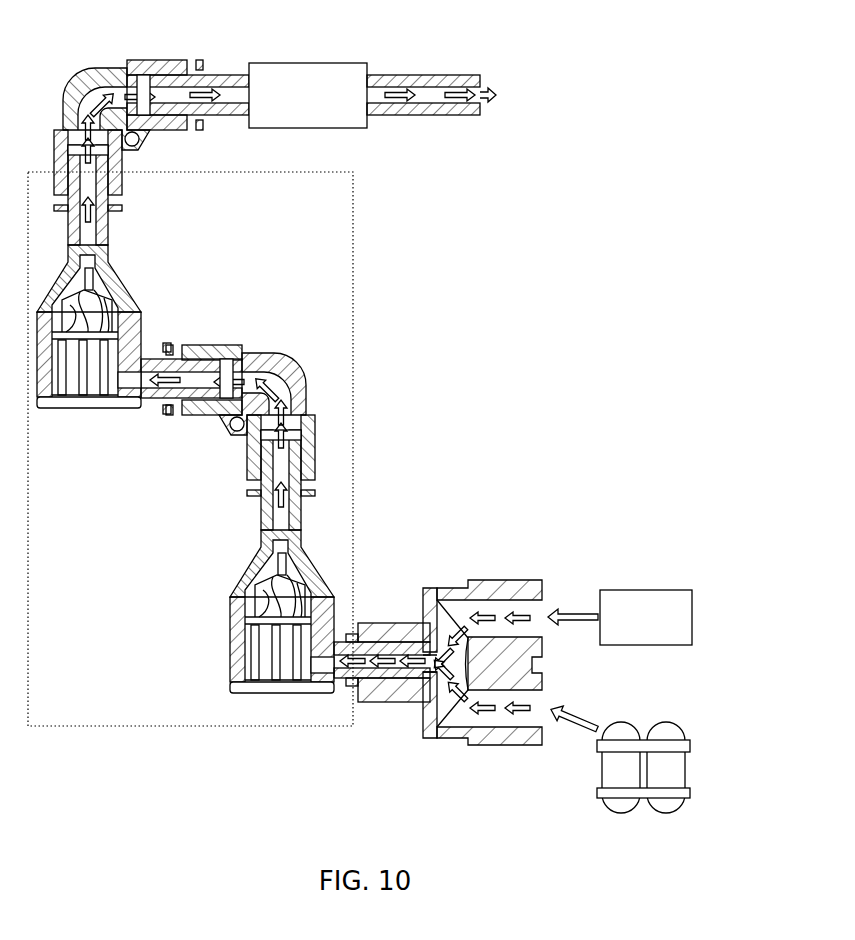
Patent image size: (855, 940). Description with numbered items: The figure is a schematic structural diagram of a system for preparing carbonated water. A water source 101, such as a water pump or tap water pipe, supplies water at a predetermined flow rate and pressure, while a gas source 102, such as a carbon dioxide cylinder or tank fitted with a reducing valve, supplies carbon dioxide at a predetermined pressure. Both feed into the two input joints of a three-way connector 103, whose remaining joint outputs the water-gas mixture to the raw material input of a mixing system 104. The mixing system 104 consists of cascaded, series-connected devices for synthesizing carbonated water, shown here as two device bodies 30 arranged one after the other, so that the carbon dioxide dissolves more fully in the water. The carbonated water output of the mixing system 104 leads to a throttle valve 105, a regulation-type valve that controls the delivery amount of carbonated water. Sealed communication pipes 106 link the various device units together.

The device body 30 is at (120, 292).
The water source 101 is at (641, 590).
The gas source 102 is at (620, 722).
The three-way connector 103 is at (436, 588).
The mixing system 104 is at (128, 727).
The throttle valve 105 is at (297, 63).
The communication pipes 106 is at (138, 66).